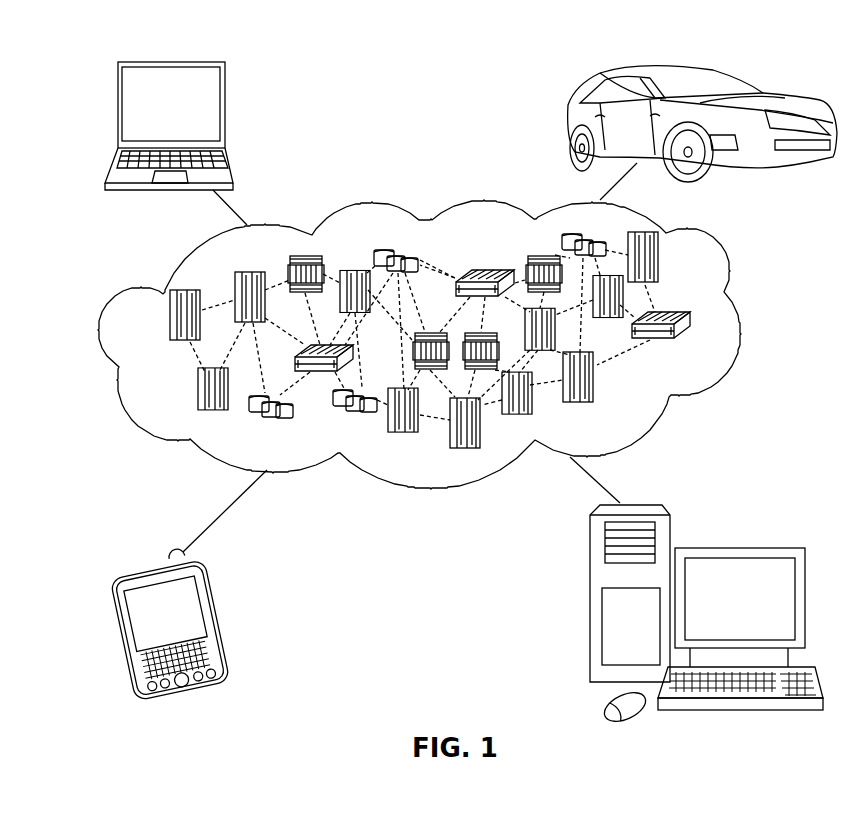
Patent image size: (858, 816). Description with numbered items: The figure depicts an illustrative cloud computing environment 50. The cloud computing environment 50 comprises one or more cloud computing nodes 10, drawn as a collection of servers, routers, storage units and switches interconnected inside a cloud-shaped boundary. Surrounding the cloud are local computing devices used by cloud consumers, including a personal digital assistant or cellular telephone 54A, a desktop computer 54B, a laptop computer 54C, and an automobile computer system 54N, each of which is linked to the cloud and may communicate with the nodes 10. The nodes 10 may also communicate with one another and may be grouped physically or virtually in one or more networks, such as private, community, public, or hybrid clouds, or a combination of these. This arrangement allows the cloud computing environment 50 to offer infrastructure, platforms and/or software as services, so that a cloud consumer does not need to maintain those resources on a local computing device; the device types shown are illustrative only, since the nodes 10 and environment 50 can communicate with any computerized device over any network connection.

The cloud computing node 10 is at (697, 349).
The cloud computing environment 50 is at (740, 323).
The personal digital assistant or cellular telephone 54A is at (220, 618).
The desktop computer 54B is at (737, 548).
The laptop computer 54C is at (226, 110).
The automobile computer system 54N is at (565, 122).